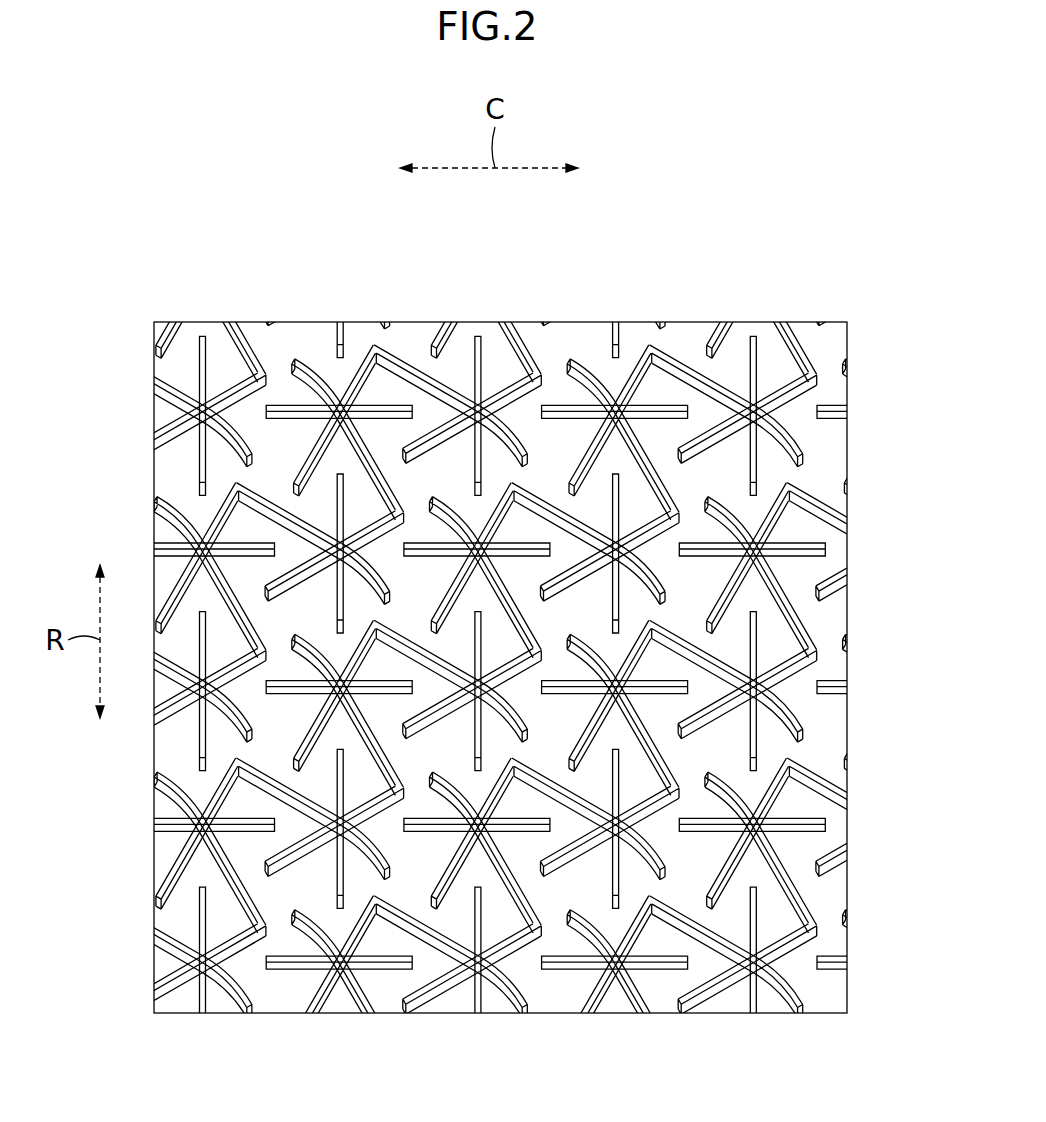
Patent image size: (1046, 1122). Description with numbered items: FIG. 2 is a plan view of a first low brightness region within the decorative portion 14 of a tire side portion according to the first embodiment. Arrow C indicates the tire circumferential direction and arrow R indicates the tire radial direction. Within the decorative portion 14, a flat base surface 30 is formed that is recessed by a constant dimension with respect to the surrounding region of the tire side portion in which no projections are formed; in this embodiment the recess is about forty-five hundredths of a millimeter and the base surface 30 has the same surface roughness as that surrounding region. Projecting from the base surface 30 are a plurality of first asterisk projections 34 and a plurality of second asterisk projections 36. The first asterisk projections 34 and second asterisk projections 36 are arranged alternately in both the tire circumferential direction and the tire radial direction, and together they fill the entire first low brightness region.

The decorative portion 14 is at (316, 318).
The base surface 30 is at (547, 350).
The first asterisk projections 34 is at (738, 350).
The second asterisk projections 36 is at (604, 355).